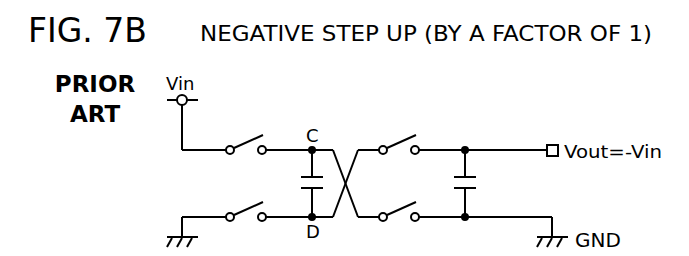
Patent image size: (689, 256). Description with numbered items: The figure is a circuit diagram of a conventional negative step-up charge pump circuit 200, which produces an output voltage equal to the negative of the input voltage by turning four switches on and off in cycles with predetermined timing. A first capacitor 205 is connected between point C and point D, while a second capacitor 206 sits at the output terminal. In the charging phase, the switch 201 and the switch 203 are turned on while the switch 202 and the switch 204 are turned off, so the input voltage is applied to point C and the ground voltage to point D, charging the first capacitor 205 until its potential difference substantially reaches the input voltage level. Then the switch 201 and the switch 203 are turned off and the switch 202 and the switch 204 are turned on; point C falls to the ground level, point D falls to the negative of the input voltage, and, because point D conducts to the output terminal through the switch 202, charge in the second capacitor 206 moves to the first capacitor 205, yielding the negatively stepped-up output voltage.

The charge pump circuit 200 is at (482, 88).
The switch 201 is at (250, 133).
The switch 202 is at (403, 133).
The switch 203 is at (247, 218).
The switch 204 is at (400, 218).
The first capacitor 205 is at (302, 184).
The second capacitor 206 is at (455, 184).